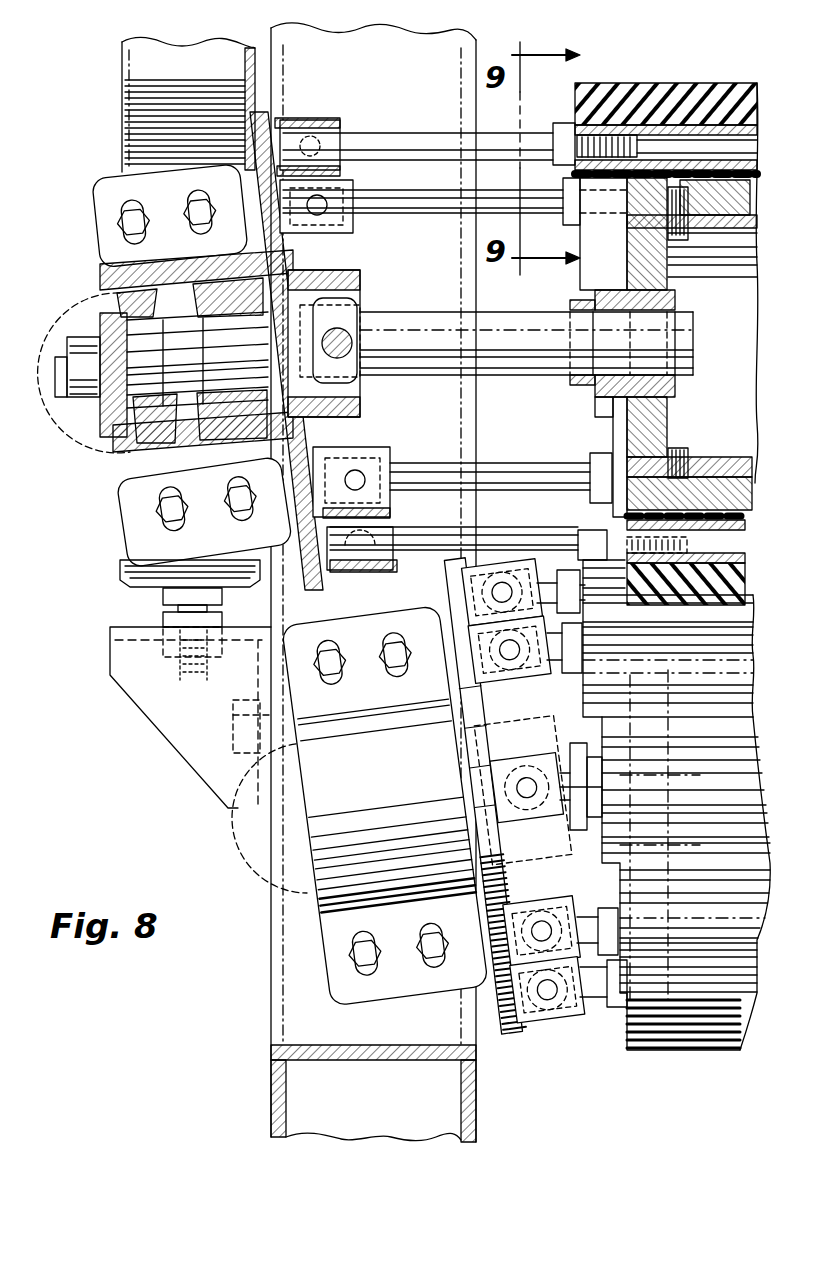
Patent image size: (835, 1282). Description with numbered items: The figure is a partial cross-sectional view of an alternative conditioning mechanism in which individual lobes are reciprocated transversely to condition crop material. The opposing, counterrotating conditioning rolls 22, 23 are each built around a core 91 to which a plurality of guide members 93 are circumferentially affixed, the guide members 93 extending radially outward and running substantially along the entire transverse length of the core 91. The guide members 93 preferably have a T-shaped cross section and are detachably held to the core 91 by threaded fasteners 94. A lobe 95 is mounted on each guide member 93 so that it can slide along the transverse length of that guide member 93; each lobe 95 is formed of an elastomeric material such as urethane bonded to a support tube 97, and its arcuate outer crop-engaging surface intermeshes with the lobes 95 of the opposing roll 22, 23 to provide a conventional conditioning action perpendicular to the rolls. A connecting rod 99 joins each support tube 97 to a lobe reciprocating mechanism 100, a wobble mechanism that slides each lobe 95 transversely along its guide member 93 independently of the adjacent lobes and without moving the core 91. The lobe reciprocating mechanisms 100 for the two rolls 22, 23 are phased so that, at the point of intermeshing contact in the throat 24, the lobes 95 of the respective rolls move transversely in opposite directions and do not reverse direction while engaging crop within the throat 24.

The conditioning roll 22 is at (672, 68).
The conditioning roll 23 is at (626, 1066).
The throat 24 is at (575, 681).
The core 91 is at (720, 457).
The guide member 93 is at (745, 200).
The threaded fastener 94 is at (683, 236).
The lobe 95 is at (633, 83).
The support tube 97 is at (752, 138).
The connecting rod 99 is at (437, 133).
The lobe reciprocating mechanism 100 is at (85, 297).